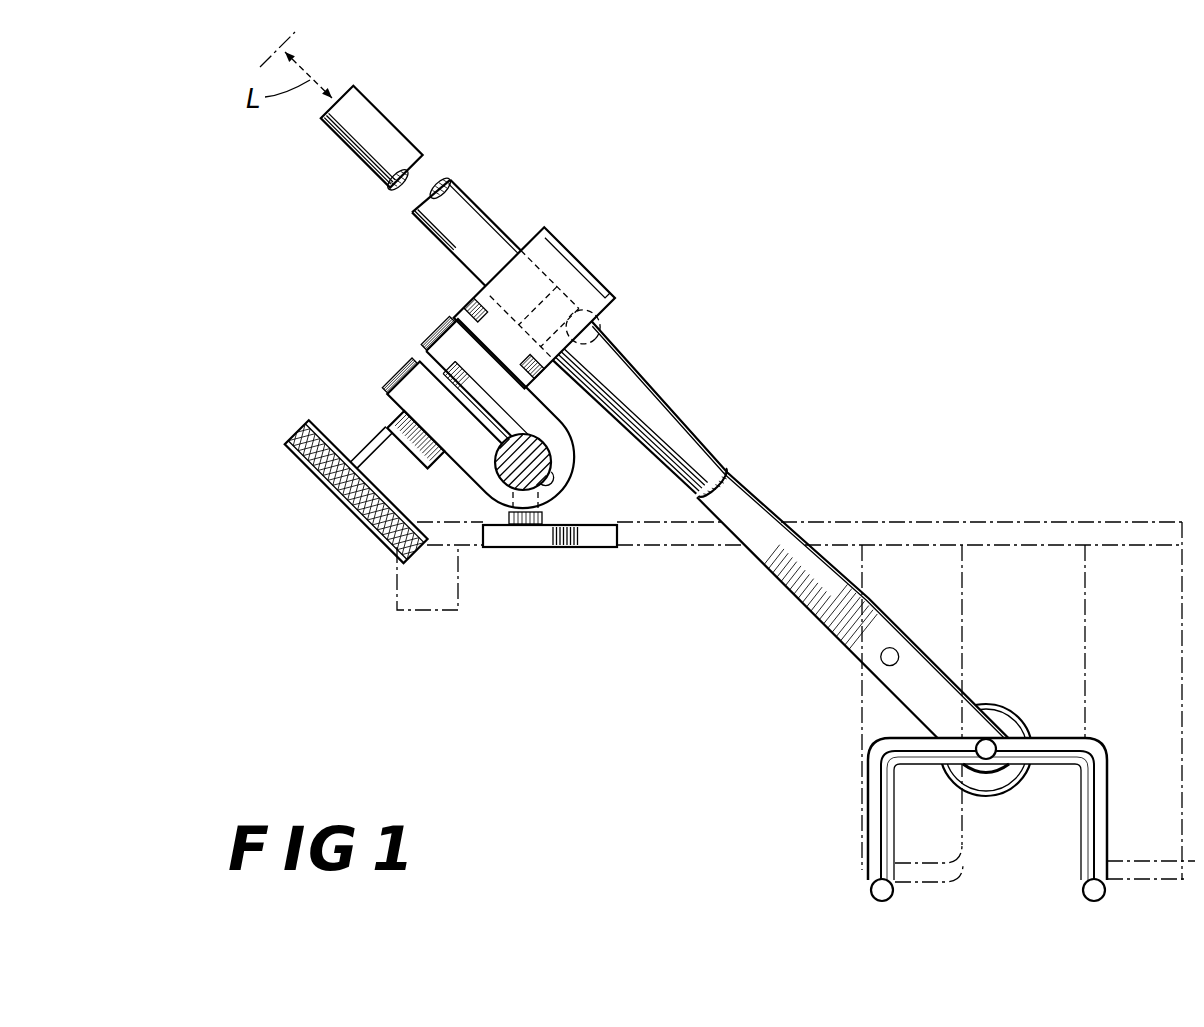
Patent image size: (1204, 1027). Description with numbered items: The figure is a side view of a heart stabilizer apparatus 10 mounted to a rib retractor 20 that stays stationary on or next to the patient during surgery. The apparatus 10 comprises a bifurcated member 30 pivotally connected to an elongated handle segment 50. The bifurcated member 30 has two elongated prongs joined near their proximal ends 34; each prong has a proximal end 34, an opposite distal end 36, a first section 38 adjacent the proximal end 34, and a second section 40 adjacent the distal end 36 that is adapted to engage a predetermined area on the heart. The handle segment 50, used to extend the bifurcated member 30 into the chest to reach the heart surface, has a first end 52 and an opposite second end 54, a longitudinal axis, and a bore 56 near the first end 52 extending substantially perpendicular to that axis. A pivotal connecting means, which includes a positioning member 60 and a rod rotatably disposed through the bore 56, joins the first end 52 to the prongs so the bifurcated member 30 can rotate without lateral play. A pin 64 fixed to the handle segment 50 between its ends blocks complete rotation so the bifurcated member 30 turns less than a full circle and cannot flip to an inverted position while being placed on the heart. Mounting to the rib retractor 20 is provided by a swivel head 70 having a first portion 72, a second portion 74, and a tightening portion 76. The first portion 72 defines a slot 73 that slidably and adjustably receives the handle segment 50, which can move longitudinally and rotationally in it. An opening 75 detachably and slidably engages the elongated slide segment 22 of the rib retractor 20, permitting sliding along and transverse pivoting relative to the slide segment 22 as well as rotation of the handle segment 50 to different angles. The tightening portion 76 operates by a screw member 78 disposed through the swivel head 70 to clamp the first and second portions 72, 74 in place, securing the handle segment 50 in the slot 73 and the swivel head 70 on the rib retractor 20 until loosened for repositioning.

The apparatus 10 is at (988, 232).
The rib retractor 20 is at (545, 550).
The slide segment 22 is at (522, 461).
The bifurcated member 30 is at (950, 790).
The proximal end 34 is at (1060, 737).
The distal end 36 is at (873, 887).
The first section 38 is at (1070, 752).
The second section 40 is at (870, 803).
The handle segment 50 is at (618, 454).
The first end 52 is at (993, 767).
The second end 54 is at (320, 117).
The bore 56 is at (973, 773).
The positioning member 60 is at (978, 707).
The pin 64 is at (885, 662).
The swivel head 70 is at (449, 402).
The first portion 72 is at (534, 307).
The slot 73 is at (605, 345).
The second portion 74 is at (487, 421).
The opening 75 is at (548, 480).
The tightening portion 76 is at (356, 491).
The screw member 78 is at (397, 457).